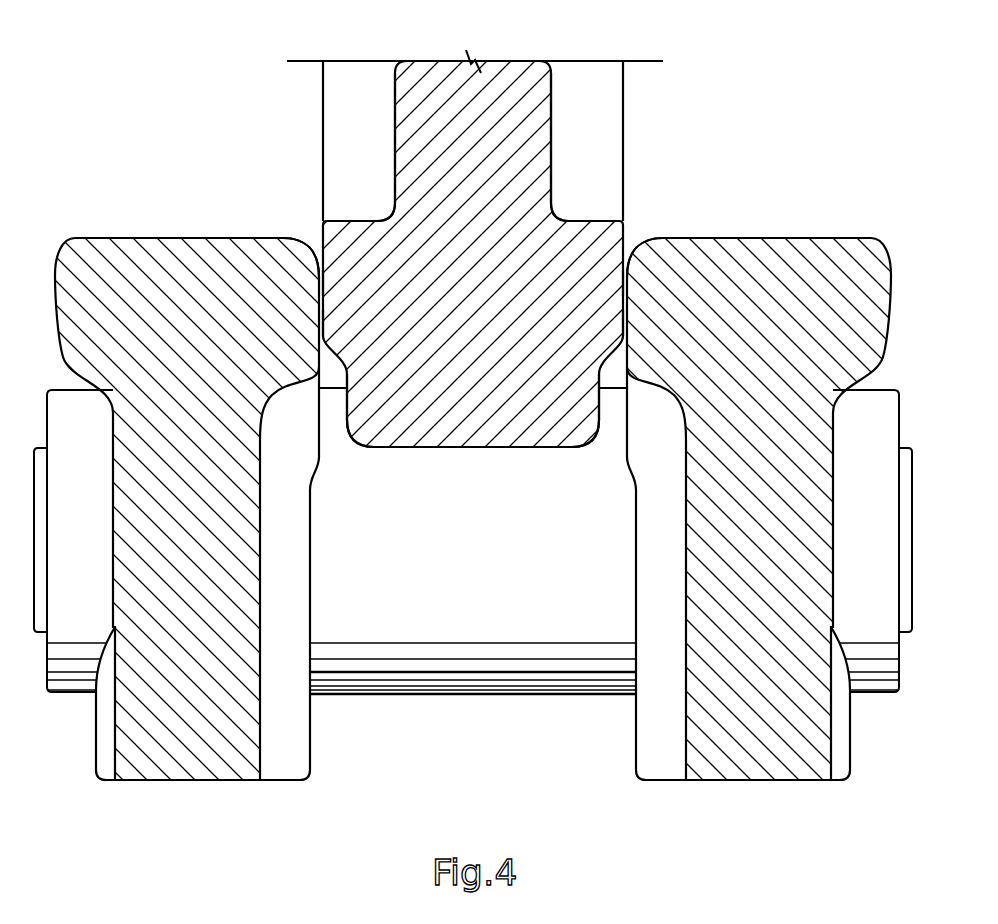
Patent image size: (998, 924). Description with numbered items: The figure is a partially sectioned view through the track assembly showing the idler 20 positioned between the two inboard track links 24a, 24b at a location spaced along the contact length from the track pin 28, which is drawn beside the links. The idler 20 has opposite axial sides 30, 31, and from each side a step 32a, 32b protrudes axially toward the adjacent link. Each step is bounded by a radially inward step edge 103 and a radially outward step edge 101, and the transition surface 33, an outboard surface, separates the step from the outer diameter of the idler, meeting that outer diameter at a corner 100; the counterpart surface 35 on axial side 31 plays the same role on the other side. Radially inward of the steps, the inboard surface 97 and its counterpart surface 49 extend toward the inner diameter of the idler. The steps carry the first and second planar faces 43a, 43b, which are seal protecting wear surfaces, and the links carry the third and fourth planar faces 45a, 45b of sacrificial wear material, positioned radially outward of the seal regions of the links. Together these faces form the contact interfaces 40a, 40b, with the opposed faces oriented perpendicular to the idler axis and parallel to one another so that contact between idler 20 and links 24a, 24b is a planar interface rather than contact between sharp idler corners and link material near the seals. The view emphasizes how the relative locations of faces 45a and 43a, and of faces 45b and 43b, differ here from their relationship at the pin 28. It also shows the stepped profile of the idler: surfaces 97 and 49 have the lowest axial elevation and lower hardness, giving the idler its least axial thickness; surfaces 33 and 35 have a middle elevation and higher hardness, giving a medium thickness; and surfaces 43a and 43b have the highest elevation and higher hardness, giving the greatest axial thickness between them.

The idler 20 is at (537, 122).
The track link 24a is at (136, 247).
The track link 24b is at (806, 247).
The track pin 28 is at (888, 540).
The axial side 30 is at (587, 104).
The axial side 31 is at (357, 104).
The step 32a is at (361, 240).
The step 32b is at (585, 240).
The transition surface 33 is at (605, 410).
The counterpart surface 35 is at (341, 410).
The contact interface 40a is at (312, 240).
The contact interface 40b is at (634, 240).
The first planar face 43a is at (320, 283).
The second planar face 43b is at (626, 283).
The third planar face 45a is at (328, 323).
The fourth planar face 45b is at (618, 323).
The counterpart surface 49 is at (395, 153).
The inboard surface 97 is at (551, 153).
The corner 100 is at (358, 440).
The radially outward step edge 101 is at (317, 372).
The radially inward step edge 103 is at (330, 220).